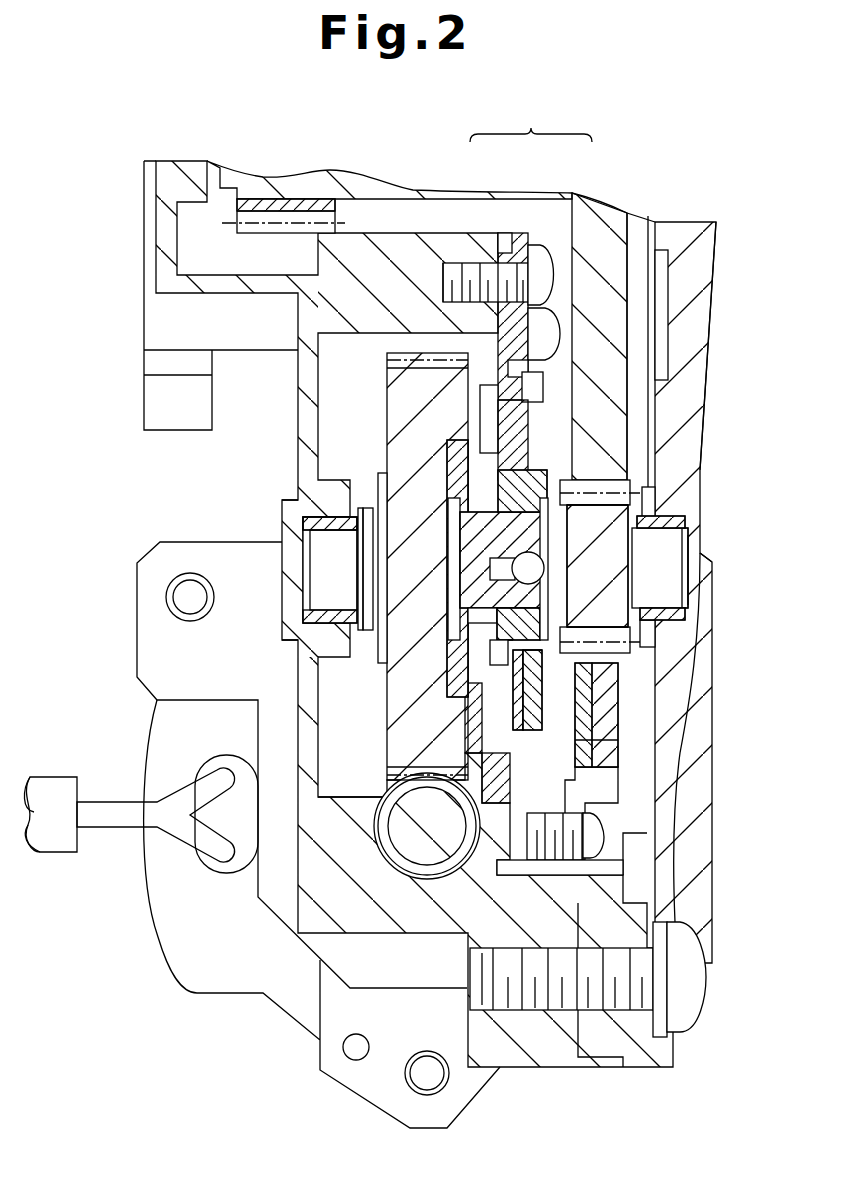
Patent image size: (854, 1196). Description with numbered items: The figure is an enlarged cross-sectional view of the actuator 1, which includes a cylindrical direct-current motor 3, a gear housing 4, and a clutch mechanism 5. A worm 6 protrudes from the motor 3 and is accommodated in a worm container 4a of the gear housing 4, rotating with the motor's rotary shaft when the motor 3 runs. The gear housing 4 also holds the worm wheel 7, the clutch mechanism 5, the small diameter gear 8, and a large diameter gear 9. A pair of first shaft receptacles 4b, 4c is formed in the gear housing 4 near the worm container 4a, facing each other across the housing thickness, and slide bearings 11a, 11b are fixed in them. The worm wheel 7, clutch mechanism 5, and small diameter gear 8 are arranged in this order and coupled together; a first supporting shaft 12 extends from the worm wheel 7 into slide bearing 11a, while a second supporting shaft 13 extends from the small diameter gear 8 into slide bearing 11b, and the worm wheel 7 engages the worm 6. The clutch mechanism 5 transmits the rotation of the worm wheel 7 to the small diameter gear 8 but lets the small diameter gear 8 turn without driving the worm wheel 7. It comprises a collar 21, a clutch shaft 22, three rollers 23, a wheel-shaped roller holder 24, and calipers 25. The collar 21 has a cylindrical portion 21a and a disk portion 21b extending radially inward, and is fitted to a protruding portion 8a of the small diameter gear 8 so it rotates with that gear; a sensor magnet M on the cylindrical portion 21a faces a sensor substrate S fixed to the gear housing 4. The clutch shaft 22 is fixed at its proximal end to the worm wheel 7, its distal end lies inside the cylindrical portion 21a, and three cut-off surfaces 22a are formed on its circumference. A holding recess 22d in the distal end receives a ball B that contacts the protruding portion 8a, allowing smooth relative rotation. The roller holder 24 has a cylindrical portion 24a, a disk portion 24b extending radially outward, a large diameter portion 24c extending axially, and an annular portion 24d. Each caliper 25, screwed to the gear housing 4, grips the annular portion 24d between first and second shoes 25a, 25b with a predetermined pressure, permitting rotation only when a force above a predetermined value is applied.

The actuator 1 is at (743, 226).
The direct-current motor 3 is at (160, 940).
The gear housing 4 is at (712, 310).
The worm container 4a is at (400, 863).
The first shaft receptacle 4b is at (305, 545).
The first shaft receptacle 4c is at (690, 585).
The clutch mechanism 5 is at (574, 470).
The worm 6 is at (405, 807).
The worm wheel 7 is at (385, 405).
The small diameter gear 8 is at (683, 608).
The protruding portion 8a is at (660, 568).
The large diameter gear 9 is at (595, 238).
The slide bearing 11a is at (330, 515).
The slide bearing 11b is at (687, 508).
The first supporting shaft 12 is at (330, 575).
The second supporting shaft 13 is at (683, 540).
The collar 21 is at (560, 445).
The cylindrical portion 21a is at (553, 582).
The disk portion 21b is at (555, 532).
The clutch shaft 22 is at (470, 595).
The cut-off surface 22a is at (545, 640).
The holding recess 22d is at (490, 560).
The roller 23 is at (470, 620).
The roller holder 24 is at (528, 735).
The cylindrical portion 24a is at (467, 470).
The disk portion 24b is at (488, 420).
The large diameter portion 24c is at (507, 395).
The annular portion 24d is at (522, 377).
The caliper 25 is at (531, 120).
The first shoe 25a is at (508, 330).
The second shoe 25b is at (540, 330).
The ball B is at (515, 567).
The sensor magnet M is at (578, 678).
The sensor substrate S is at (580, 727).